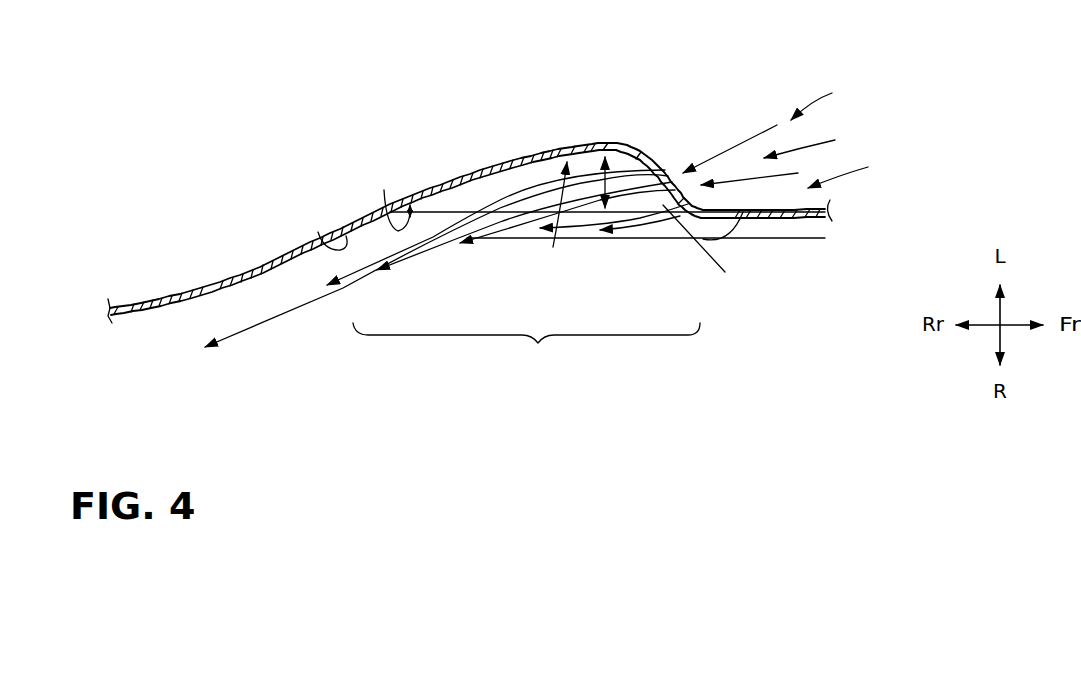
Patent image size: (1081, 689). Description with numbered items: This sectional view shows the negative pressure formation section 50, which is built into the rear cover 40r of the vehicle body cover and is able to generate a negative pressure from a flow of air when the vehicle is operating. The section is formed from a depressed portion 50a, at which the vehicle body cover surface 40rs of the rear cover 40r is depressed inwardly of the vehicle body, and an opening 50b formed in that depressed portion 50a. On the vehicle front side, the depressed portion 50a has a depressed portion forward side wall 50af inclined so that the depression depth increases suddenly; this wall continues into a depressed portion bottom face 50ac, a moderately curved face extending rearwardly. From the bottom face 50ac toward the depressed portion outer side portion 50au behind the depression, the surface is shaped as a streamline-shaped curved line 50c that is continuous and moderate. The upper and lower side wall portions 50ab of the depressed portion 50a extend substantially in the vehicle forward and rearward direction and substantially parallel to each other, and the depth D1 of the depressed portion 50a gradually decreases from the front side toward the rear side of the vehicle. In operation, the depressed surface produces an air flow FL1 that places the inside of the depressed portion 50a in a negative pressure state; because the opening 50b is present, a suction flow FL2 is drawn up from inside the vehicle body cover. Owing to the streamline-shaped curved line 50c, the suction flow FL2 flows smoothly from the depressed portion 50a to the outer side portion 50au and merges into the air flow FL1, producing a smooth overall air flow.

The vehicle body cover surface 40rs is at (152, 314).
The rear cover 40r is at (761, 226).
The negative pressure formation section 50 is at (589, 306).
The opening 50b is at (660, 186).
The depressed portion 50a is at (553, 247).
The depressed portion forward side wall 50af is at (611, 215).
The upper and lower side wall portions 50ab is at (513, 170).
The depressed portion bottom face 50ac is at (505, 215).
The depressed portion outer side portion 50au is at (318, 232).
The streamline-shaped curved line 50c is at (384, 190).
The depth of the depressed portion D1 is at (618, 176).
The air flow FL1 is at (300, 308).
The suction flow FL2 is at (730, 143).